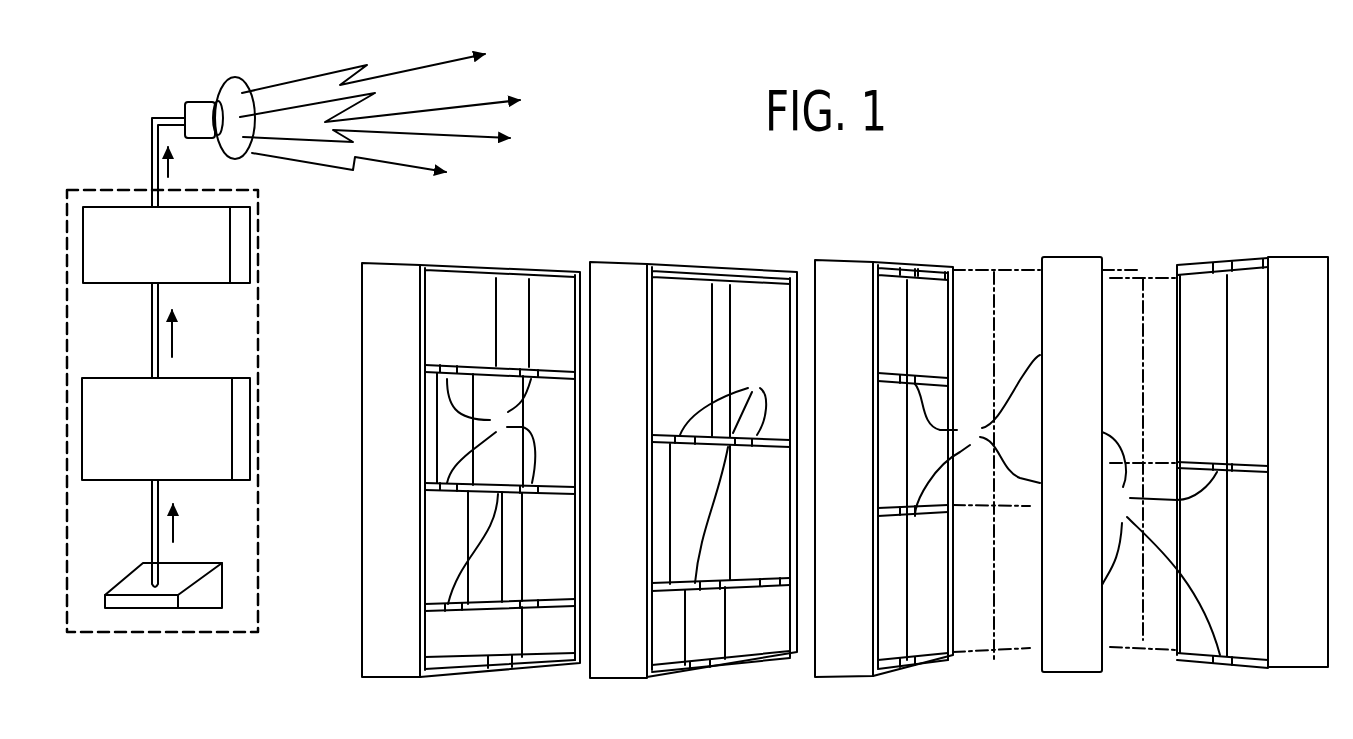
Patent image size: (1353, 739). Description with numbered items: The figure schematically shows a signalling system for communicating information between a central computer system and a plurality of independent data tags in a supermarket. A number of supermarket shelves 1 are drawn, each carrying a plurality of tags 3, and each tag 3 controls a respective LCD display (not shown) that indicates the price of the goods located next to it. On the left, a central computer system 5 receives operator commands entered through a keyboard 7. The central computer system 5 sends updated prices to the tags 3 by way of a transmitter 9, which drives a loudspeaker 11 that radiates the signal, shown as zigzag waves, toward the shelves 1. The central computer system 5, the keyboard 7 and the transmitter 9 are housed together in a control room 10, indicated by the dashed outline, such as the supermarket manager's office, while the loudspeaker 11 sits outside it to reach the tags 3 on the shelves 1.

The supermarket shelves 1 is at (542, 260).
The tags 3 is at (833, 505).
The central computer system 5 is at (203, 378).
The keyboard 7 is at (203, 563).
The transmitter 9 is at (127, 207).
The control room 10 is at (223, 632).
The loudspeaker 11 is at (228, 93).